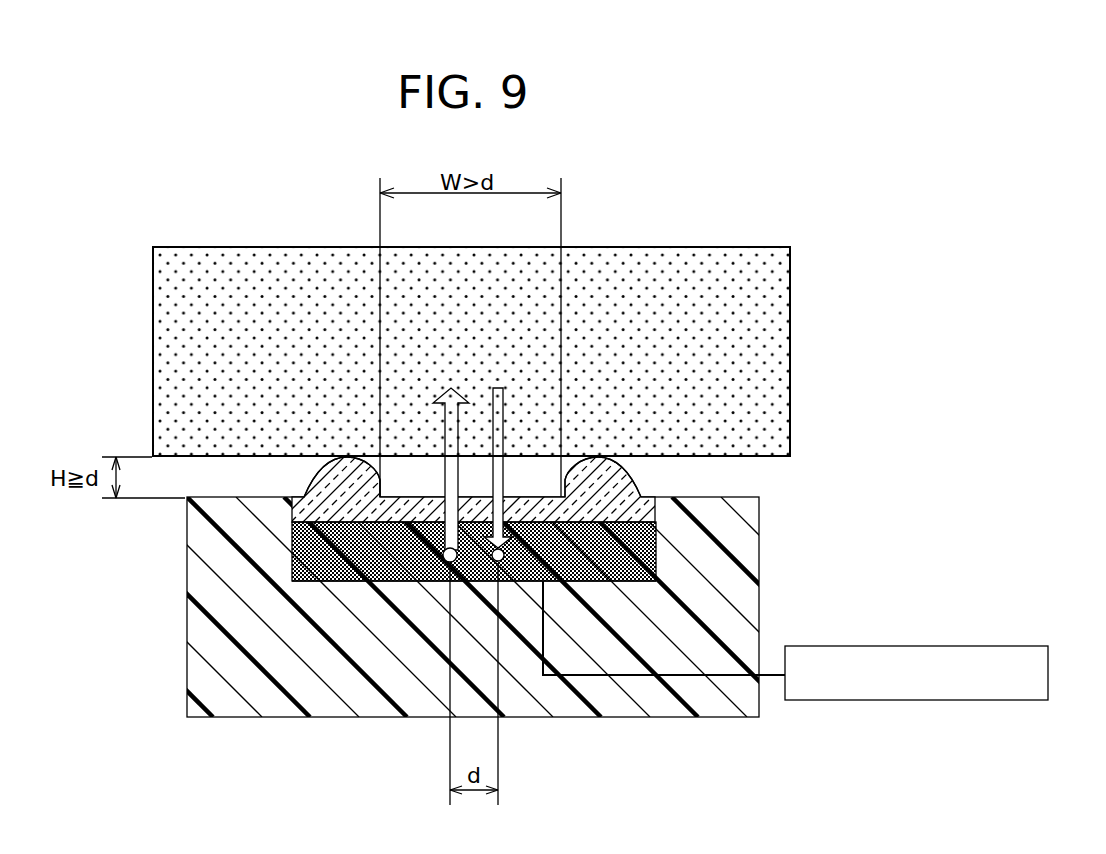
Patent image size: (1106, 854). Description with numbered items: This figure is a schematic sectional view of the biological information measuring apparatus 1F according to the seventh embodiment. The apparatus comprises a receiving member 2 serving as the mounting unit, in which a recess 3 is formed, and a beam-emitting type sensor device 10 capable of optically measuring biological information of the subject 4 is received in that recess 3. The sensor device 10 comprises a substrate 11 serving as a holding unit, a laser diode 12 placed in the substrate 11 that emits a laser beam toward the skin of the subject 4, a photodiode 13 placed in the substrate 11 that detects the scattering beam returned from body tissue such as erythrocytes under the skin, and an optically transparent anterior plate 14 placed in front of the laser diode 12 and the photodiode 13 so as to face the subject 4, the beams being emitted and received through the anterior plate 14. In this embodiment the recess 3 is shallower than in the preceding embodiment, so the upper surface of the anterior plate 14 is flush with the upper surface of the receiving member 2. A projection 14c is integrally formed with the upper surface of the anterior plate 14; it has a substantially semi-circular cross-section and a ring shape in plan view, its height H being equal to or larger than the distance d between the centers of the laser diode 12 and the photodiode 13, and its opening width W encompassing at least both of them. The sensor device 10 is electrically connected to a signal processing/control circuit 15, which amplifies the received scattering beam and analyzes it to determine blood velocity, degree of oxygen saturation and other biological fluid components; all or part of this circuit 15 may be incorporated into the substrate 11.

The biological information measuring apparatus 1F is at (625, 733).
The receiving member 2 is at (750, 553).
The recess 3 is at (306, 597).
The subject 4 is at (780, 337).
The beam-emitting type sensor device 10 is at (345, 583).
The substrate 11 is at (312, 542).
The laser diode 12 is at (447, 565).
The photodiode 13 is at (500, 563).
The anterior plate 14 is at (667, 506).
The projection 14c is at (322, 480).
The signal processing/control circuit 15 is at (888, 646).